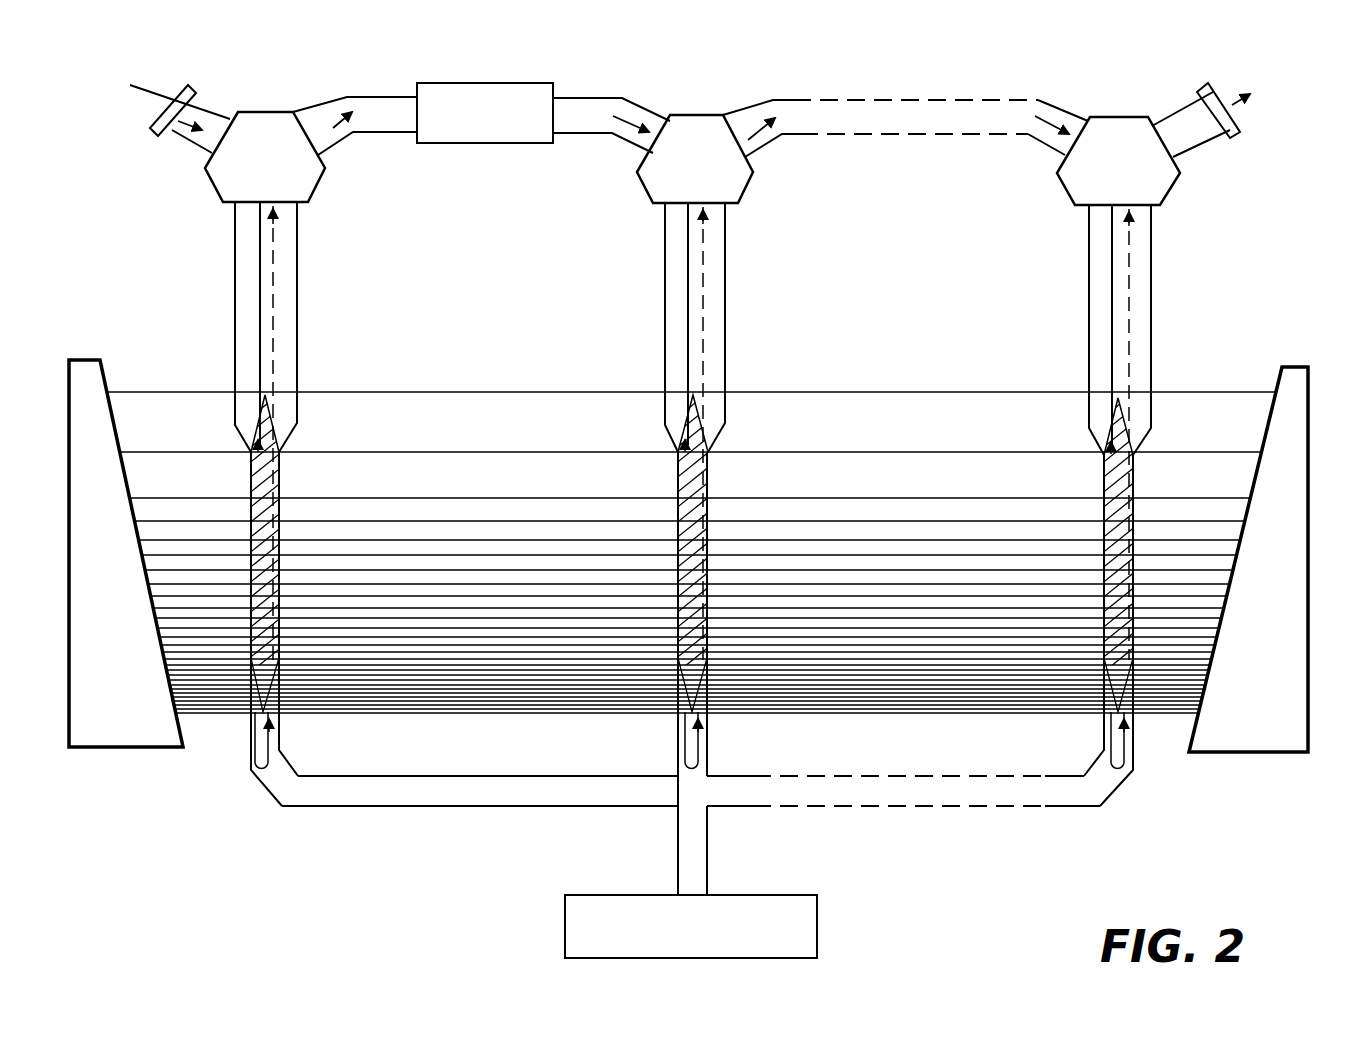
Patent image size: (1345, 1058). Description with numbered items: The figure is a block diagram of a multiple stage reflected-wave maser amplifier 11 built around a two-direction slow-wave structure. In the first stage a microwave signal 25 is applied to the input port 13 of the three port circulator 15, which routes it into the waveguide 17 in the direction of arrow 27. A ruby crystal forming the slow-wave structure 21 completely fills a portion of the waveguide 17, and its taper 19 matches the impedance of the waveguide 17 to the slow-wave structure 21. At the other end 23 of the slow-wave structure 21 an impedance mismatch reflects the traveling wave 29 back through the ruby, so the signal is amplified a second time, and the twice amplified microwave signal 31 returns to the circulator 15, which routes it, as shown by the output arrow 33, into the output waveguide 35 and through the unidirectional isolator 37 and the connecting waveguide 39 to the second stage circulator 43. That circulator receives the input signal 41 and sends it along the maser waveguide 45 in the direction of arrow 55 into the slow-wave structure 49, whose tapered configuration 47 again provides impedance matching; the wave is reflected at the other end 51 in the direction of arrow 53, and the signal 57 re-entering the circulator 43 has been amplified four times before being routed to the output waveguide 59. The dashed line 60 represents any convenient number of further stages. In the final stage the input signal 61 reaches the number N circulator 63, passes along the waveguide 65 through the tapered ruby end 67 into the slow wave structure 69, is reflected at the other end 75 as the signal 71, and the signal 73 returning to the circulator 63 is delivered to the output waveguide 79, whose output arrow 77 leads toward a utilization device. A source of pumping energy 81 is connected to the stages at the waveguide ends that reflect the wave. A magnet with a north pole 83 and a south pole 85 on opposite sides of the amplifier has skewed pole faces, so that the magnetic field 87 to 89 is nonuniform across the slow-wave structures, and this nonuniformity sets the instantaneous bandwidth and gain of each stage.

The multiple stage reflected-wave maser amplifier 11 is at (373, 864).
The input port 13 is at (186, 84).
The three port circulator 15 is at (260, 112).
The waveguide 17 is at (298, 294).
The taper 19 is at (291, 425).
The slow-wave structure 21 is at (282, 473).
The other end of the slow-wave structure 23 is at (312, 775).
The microwave signal 25 is at (180, 132).
The arrow 27 is at (259, 318).
The traveling wave 29 is at (256, 776).
The twice amplified microwave signal 31 is at (282, 224).
The output beam arrow 33 is at (343, 128).
The output waveguide 35 is at (386, 97).
The unidirectional isolator 37 is at (518, 83).
The waveguide from isolator 39 is at (655, 110).
The input signal 41 is at (610, 140).
The second stage circulator 43 is at (700, 115).
The maser waveguide 45 is at (727, 296).
The tapered configuration 47 is at (715, 425).
The slow-wave structure 49 is at (710, 473).
The other end of the second stage slow-wave structure 51 is at (730, 776).
The arrow 53 is at (675, 810).
The arrow 55 is at (687, 320).
The signal 57 is at (708, 224).
The output waveguide 59 is at (760, 128).
The dashed line 60 is at (945, 102).
The input signal 61 is at (1052, 108).
The number N circulator 63 is at (1118, 117).
The waveguide 65 is at (1153, 298).
The tapered tip 67 is at (1143, 425).
The slow wave structure 69 is at (1136, 479).
The signal 71 is at (1128, 793).
The signal 73 is at (1132, 226).
The other end of the slow-wave structure 75 is at (1072, 778).
The output beam arrow 77 is at (1248, 92).
The output waveguide 79 is at (1233, 137).
The source of pumping energy 81 is at (817, 900).
The north pole 83 is at (134, 748).
The south pole 85 is at (1258, 755).
The magnetic field 87 is at (148, 392).
The magnetic field 89 is at (222, 714).